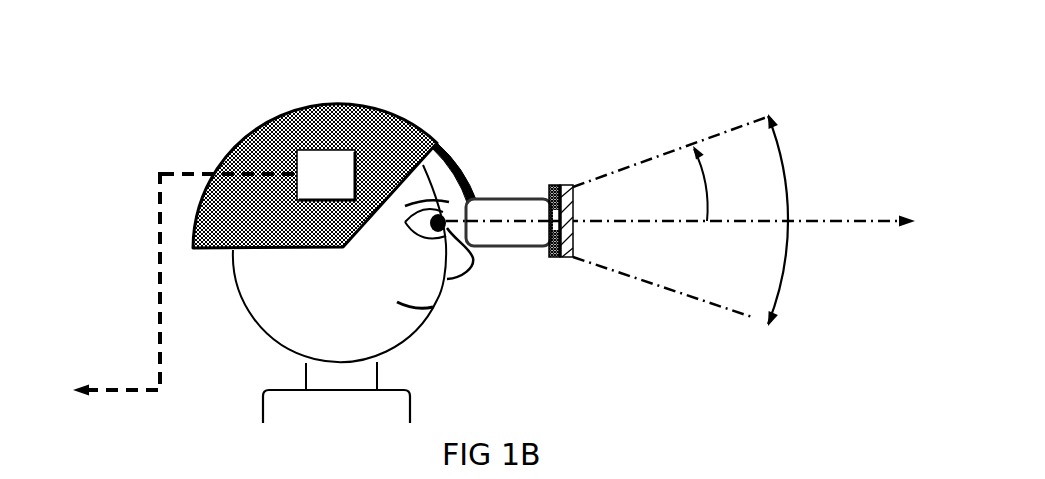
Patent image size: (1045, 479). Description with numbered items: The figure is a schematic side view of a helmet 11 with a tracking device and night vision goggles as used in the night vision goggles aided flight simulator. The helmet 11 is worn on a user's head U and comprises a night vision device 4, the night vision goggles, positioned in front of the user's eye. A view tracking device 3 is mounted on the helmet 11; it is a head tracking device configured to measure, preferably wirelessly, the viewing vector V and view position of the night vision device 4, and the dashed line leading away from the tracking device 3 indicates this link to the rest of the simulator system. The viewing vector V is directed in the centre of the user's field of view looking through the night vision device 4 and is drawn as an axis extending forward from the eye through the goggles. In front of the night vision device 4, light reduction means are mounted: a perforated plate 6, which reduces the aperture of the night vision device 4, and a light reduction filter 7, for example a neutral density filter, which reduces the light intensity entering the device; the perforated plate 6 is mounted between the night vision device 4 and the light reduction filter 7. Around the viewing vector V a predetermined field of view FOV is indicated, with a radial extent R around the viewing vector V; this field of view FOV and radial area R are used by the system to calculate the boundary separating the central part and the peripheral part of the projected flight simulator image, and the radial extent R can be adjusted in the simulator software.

The user's head U is at (136, 87).
The helmet 11 is at (270, 99).
The view tracking device 3 is at (333, 190).
The night vision device 4 is at (515, 235).
The perforated plate 6 is at (548, 174).
The light reduction filter 7 is at (571, 174).
The viewing vector V is at (695, 222).
The radial extent of the field of view R is at (711, 183).
The field of view FOV is at (715, 220).